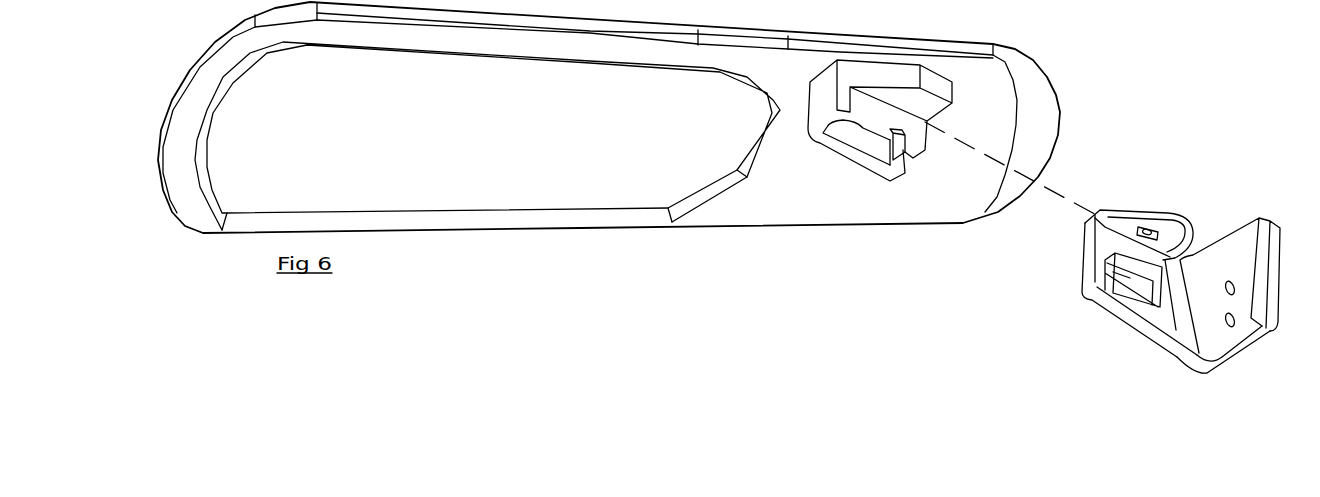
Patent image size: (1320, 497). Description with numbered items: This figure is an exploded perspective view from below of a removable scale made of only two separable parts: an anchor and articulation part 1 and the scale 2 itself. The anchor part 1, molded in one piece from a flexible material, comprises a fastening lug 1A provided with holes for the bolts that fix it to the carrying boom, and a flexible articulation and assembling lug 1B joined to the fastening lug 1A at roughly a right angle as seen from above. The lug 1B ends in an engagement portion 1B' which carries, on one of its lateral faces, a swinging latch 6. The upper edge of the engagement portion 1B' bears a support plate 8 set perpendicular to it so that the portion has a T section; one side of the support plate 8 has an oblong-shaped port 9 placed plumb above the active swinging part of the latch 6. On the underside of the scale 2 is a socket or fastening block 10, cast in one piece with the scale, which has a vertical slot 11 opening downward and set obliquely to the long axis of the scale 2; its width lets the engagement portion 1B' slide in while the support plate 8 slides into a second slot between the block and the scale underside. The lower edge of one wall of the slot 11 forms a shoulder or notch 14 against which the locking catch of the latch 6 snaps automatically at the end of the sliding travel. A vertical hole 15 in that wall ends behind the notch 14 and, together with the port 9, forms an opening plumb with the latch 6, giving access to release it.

The anchor and articulation part 1 is at (1173, 239).
The fastening lug 1A is at (1240, 303).
The flexible articulation and assembling lug 1B is at (1151, 304).
The engagement portion 1B' is at (1164, 172).
The scale 2 is at (462, 170).
The swinging latch 6 is at (1147, 277).
The support plate 8 is at (1180, 227).
The oblong-shaped port 9 is at (1145, 232).
The socket or fastening block 10 is at (822, 97).
The vertical slot 11 is at (850, 137).
The shoulder or notch 14 is at (900, 152).
The vertical hole 15 is at (892, 133).